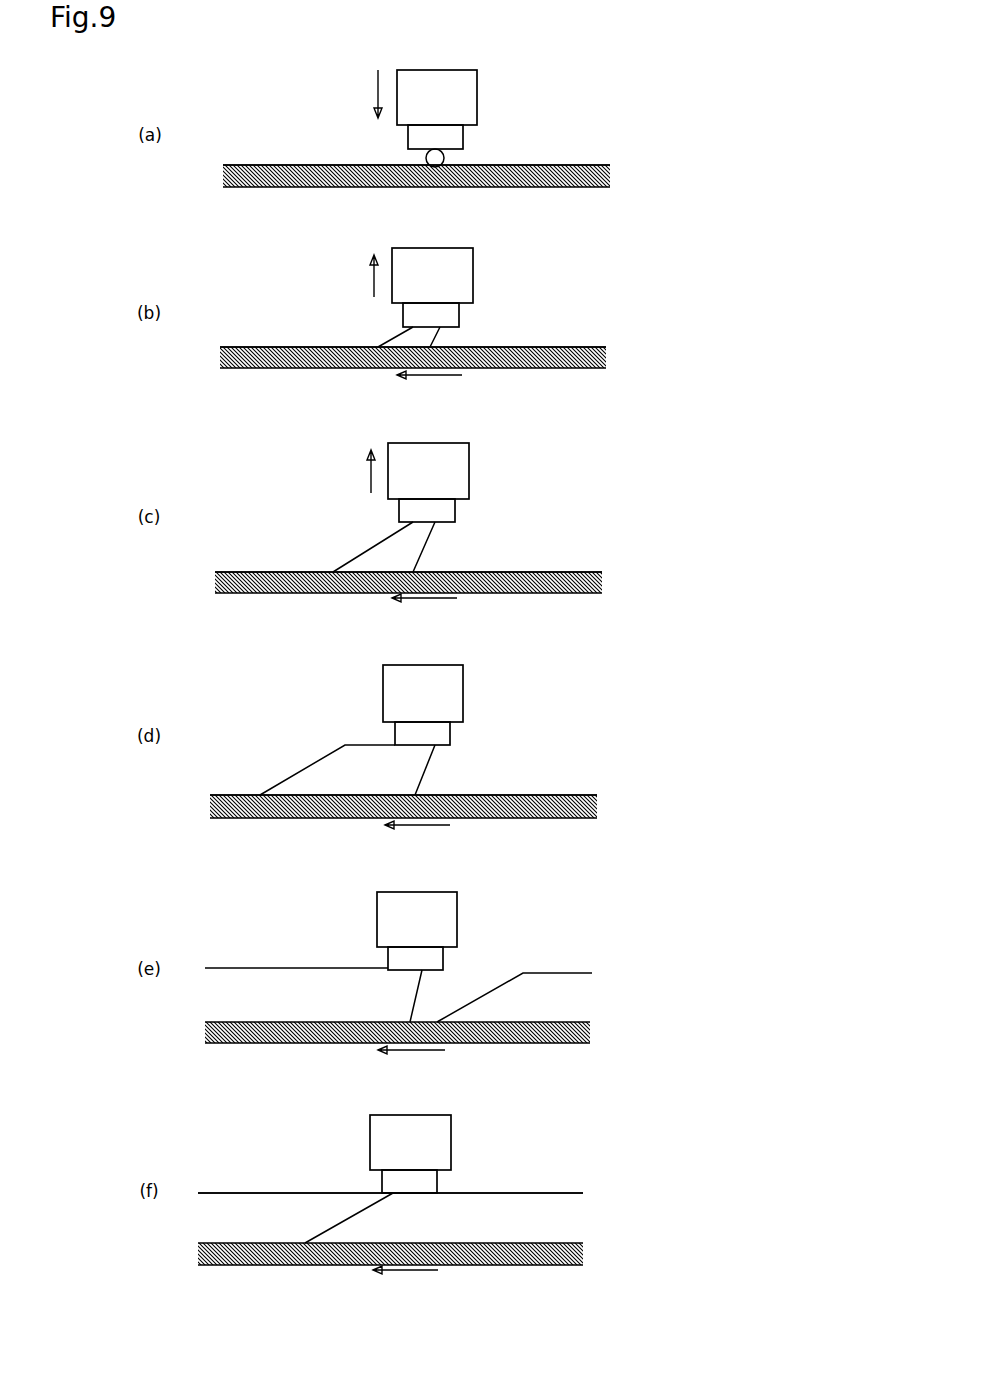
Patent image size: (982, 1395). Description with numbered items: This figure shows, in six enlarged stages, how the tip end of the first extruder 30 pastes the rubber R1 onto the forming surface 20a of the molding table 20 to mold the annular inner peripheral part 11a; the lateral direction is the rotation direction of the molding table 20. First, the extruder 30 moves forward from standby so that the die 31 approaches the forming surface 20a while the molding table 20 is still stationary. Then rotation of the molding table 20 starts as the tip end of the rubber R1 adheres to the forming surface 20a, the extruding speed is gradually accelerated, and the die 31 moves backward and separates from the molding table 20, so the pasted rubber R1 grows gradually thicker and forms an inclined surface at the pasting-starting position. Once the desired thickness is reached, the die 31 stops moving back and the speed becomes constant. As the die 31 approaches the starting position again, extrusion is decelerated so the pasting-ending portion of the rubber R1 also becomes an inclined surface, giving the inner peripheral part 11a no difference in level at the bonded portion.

The first extruder 30 is at (495, 97).
The die 31 is at (463, 140).
The molding table 20 is at (621, 170).
The forming surface 20a is at (573, 165).
The rubber R1 is at (423, 158).
The inner peripheral part 11a is at (592, 1204).